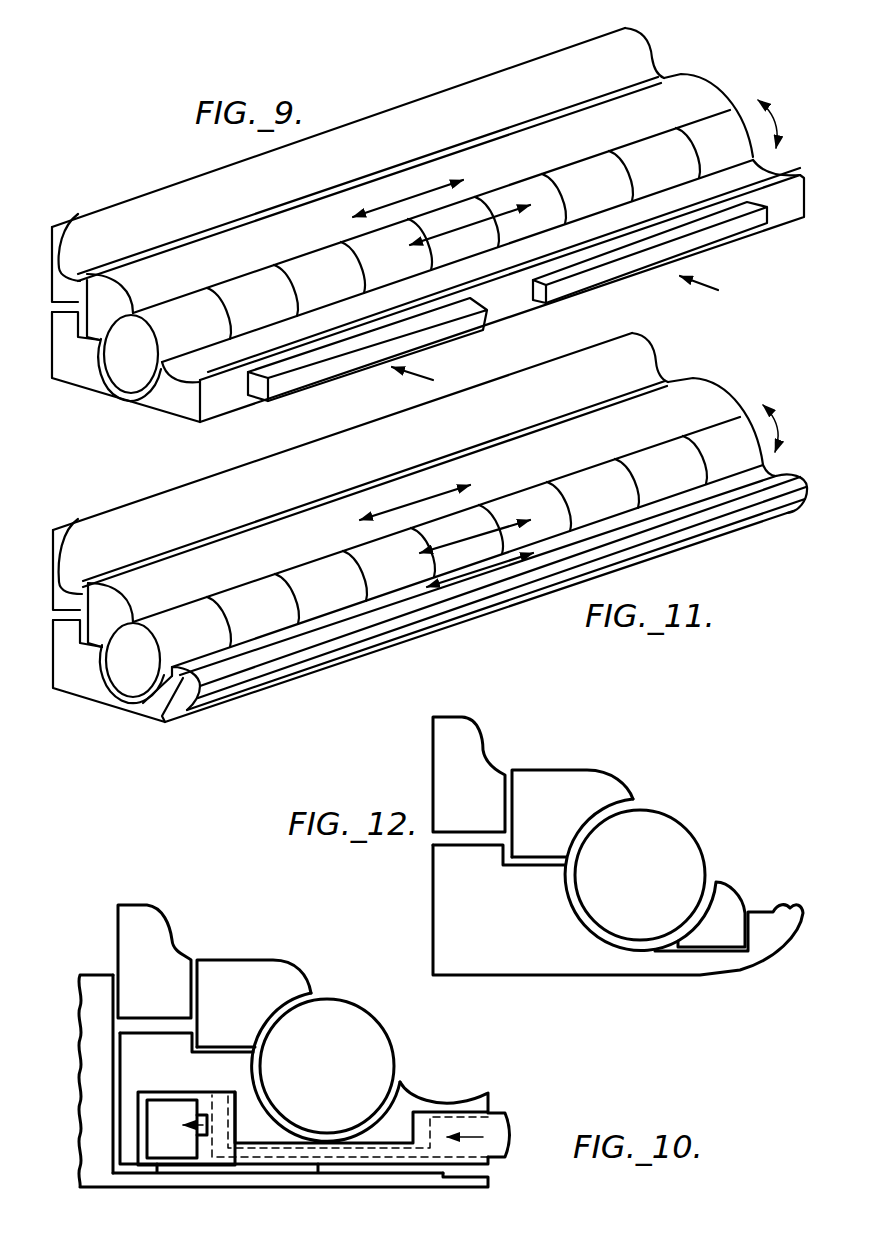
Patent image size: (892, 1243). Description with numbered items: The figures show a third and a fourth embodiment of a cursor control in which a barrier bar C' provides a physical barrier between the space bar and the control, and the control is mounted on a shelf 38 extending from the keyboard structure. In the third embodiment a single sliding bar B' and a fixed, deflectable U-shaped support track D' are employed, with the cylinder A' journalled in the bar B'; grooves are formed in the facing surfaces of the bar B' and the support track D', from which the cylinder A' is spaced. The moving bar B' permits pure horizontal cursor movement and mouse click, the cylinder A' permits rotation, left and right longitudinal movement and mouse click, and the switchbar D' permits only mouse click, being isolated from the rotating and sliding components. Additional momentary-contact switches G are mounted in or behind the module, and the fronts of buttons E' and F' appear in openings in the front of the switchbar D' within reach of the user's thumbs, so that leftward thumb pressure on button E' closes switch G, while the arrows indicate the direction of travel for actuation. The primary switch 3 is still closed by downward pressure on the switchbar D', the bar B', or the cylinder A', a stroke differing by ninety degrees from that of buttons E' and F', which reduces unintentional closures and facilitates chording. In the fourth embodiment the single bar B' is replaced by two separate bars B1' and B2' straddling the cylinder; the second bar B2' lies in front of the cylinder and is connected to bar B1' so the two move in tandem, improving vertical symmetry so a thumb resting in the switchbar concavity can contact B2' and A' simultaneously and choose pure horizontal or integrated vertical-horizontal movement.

In FIG. 9, the cylinder A' is at (425, 255).
In FIG. 11, the cylinder A' is at (431, 560).
In FIG. 12, the cylinder A' is at (635, 875).
In FIG. 10, the cylinder A' is at (326, 1067).
In FIG. 9, the sliding bar B' is at (420, 207).
In FIG. 10, the sliding bar B' is at (254, 1003).
In FIG. 11, the first sliding bar B1' is at (425, 512).
In FIG. 12, the first sliding bar B1' is at (572, 813).
In FIG. 11, the second horizontally moving bar B2' is at (453, 614).
In FIG. 12, the second horizontally moving bar B2' is at (711, 914).
In FIG. 9, the barrier bar C' is at (358, 165).
In FIG. 11, the barrier bar C' is at (360, 471).
In FIG. 12, the barrier bar C' is at (469, 774).
In FIG. 10, the barrier bar C' is at (154, 961).
In FIG. 9, the support track D' is at (428, 291).
In FIG. 12, the support track D' is at (618, 910).
In FIG. 10, the support track D' is at (304, 1098).
In FIG. 9, the button E' is at (367, 349).
In FIG. 10, the button E' is at (493, 1135).
In FIG. 9, the button F' is at (650, 256).
In FIG. 10, the momentary-contact switch G is at (186, 1128).
In FIG. 10, the primary switch 3 is at (323, 1167).
In FIG. 10, the shelf 38 is at (488, 1178).